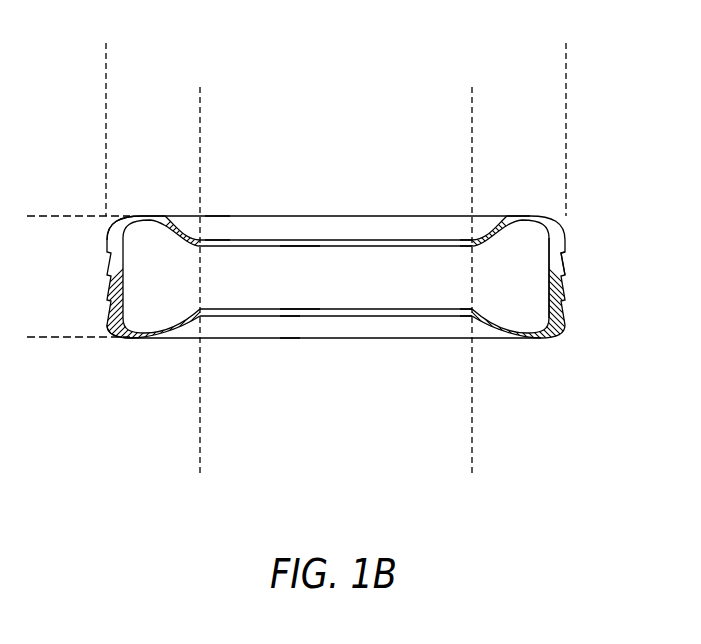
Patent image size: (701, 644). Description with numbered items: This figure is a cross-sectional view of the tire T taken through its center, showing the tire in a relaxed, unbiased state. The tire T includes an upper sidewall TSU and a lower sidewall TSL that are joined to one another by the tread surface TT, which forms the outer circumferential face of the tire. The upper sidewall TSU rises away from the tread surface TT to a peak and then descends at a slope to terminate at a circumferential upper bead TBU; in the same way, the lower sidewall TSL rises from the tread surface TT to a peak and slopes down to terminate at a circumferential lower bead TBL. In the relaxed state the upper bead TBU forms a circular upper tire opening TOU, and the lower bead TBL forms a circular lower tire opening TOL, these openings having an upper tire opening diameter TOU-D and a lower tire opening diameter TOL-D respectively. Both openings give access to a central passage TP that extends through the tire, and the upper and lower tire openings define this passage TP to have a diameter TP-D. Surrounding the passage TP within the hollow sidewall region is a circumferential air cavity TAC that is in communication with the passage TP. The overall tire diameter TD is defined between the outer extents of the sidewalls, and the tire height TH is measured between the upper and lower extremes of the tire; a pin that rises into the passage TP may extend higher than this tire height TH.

The tire T is at (127, 130).
The upper sidewall TSU is at (140, 213).
The lower sidewall TSL is at (138, 340).
The upper tire opening TOU is at (217, 222).
The lower tire opening TOL is at (290, 324).
The passage TP is at (298, 266).
The upper bead TBU is at (471, 243).
The lower bead TBL is at (470, 314).
The circumferential air cavity TAC is at (524, 250).
The tread surface TT is at (565, 262).
The tire diameter TD is at (566, 58).
The upper tire opening diameter TOU-D is at (472, 101).
The lower tire opening diameter TOL-D is at (472, 460).
The passage diameter TP-D is at (203, 282).
The tire height TH is at (53, 216).